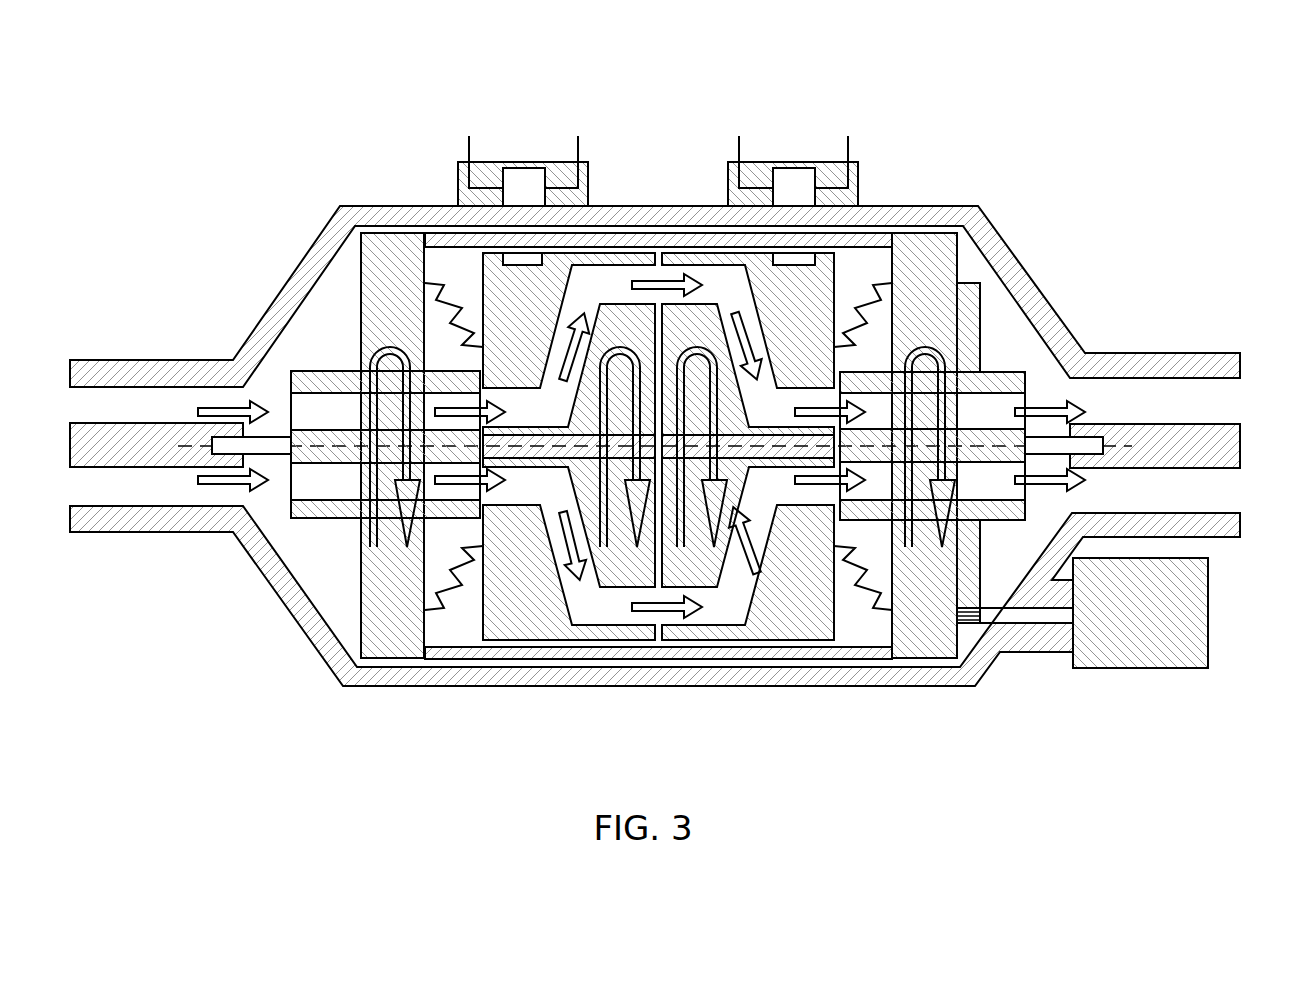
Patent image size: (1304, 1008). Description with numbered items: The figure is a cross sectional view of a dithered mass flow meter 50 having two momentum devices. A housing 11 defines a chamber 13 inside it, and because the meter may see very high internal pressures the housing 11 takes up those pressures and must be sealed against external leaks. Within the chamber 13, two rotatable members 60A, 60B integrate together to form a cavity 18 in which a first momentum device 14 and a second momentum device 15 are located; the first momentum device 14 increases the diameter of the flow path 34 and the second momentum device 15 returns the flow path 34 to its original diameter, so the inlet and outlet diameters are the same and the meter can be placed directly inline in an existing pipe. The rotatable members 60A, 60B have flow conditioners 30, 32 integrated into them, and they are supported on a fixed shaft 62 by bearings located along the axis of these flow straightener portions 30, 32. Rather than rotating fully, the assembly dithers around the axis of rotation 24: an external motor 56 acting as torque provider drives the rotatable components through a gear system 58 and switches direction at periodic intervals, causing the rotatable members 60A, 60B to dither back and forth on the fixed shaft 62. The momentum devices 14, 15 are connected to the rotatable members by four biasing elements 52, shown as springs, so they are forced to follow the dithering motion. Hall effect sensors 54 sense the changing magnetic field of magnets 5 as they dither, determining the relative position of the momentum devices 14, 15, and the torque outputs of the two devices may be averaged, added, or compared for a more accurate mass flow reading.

The dithered mass flow meter 50 is at (992, 116).
The magnets 5 is at (770, 260).
The housing 11 is at (377, 208).
The chamber 13 is at (993, 312).
The first momentum device 14 is at (533, 625).
The second momentum device 15 is at (793, 623).
The cavity 18 is at (443, 343).
The axis of rotation 24 is at (188, 447).
The flow conditioner 30 is at (322, 485).
The flow conditioner 32 is at (993, 410).
The flow path 34 is at (728, 605).
The biasing elements 52 is at (440, 283).
The Hall effect sensors 54 is at (558, 170).
The external motor 56 is at (1140, 668).
The gear system 58 is at (968, 627).
The rotatable member 60A is at (387, 640).
The rotatable member 60B is at (920, 640).
The fixed shaft 62 is at (225, 445).